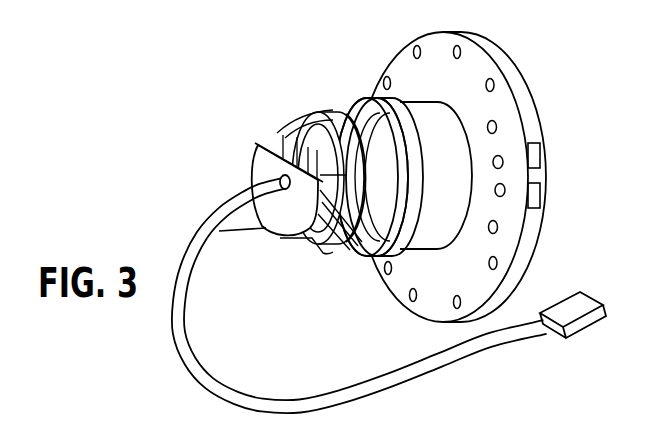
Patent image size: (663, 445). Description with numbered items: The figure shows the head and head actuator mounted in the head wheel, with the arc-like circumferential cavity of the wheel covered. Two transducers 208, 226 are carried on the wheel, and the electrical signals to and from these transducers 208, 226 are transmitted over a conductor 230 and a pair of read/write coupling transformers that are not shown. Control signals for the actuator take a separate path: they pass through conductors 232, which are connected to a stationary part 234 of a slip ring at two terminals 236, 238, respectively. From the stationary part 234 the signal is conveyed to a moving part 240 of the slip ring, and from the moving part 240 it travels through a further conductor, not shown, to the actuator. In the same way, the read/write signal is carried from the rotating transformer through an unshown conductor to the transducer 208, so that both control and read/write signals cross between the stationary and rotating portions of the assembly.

The transducer 208 is at (541, 191).
The transducer 226 is at (541, 153).
The conductor 230 is at (453, 359).
The conductors 232 is at (222, 233).
The stationary part of slip ring 234 is at (340, 256).
The terminal 236 is at (306, 239).
The terminal 238 is at (333, 113).
The moving part of slip ring 240 is at (360, 98).